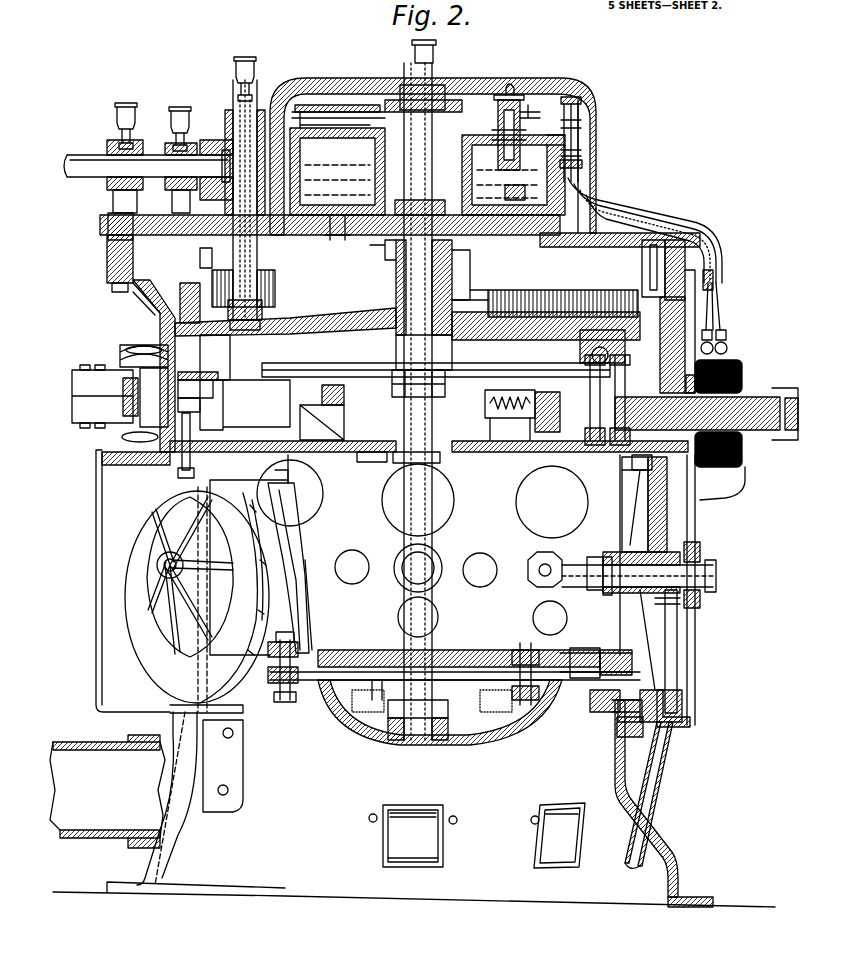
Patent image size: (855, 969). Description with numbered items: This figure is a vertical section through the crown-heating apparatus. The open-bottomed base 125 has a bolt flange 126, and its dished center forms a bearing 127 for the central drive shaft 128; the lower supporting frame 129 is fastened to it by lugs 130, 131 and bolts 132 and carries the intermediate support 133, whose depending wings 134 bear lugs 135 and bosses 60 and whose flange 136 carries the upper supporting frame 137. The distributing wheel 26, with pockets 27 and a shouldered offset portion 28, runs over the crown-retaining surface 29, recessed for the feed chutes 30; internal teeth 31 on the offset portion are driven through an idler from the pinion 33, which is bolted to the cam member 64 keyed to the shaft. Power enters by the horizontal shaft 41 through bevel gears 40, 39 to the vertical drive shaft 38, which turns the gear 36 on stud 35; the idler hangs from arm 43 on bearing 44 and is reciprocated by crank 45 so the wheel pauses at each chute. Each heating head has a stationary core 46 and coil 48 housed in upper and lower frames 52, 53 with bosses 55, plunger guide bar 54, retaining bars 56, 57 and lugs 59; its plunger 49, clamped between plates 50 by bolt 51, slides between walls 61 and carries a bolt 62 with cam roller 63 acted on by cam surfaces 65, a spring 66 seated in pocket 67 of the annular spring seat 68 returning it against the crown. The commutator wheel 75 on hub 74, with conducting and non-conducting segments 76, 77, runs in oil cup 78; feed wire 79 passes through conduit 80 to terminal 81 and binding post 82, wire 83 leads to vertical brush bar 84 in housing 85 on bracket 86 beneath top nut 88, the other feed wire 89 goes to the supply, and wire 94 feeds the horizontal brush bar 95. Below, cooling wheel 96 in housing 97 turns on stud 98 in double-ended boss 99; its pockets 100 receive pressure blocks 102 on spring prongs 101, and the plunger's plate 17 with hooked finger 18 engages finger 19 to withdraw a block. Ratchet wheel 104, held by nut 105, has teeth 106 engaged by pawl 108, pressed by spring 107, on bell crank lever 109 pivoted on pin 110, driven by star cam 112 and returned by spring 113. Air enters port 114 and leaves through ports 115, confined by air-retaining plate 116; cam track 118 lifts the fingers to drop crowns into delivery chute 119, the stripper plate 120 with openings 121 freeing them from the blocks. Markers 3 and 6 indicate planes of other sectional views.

The housing plate 3 is at (190, 236).
The fly wheel and shaft 6 is at (124, 558).
The plate 17 is at (622, 506).
The hooked finger 18 is at (642, 468).
The finger 19 is at (616, 706).
The crown distributing wheel 26 is at (107, 249).
The vertical pockets 27 is at (214, 257).
The shouldered offset portion 28 is at (208, 268).
The annular flat surface 29 is at (136, 290).
The vertical crown feed chutes 30 is at (684, 319).
The teeth 31 is at (224, 286).
The pinion 33 is at (470, 296).
The stud 35 is at (345, 232).
The gear 36 is at (385, 252).
The vertical drive shaft 38 is at (254, 162).
The bevel gear 39 is at (258, 186).
The bevel gear 40 is at (205, 136).
The horizontal power shaft 41 is at (90, 160).
The arm 43 is at (406, 272).
The bearing 44 is at (452, 278).
The crank 45 is at (251, 318).
The stationary core 46 is at (748, 472).
The coil 48 is at (136, 348).
The reciprocating plunger 49 is at (342, 406).
The plates 50 is at (530, 445).
The bolt 51 is at (604, 396).
The upper frame 52 is at (72, 384).
The lower frame 53 is at (72, 413).
The plunger guide bar 54 is at (622, 491).
The bosses 55 is at (82, 368).
The upper retaining bar 56 is at (126, 352).
The lower retaining bar 57 is at (150, 462).
The lugs 59 is at (128, 394).
The bosses 60 is at (154, 397).
The walls 61 is at (290, 402).
The bolt 62 is at (541, 428).
The cam roller 63 is at (302, 380).
The cam member 64 is at (594, 348).
The cam surfaces 65 is at (392, 392).
The spring 66 is at (490, 406).
The pocket 67 is at (495, 446).
The annular spring seat 68 is at (348, 442).
The hub 74 is at (500, 98).
The commutator wheel 75 is at (480, 205).
The segments 76 is at (520, 202).
The segments 77 is at (378, 184).
The cup 78 is at (526, 275).
The feed wire 79 is at (584, 139).
The conduit 80 is at (682, 220).
The terminal 81 is at (580, 104).
The binding post 82 is at (574, 97).
The wire 83 is at (530, 108).
The vertical brush bar 84 is at (580, 172).
The housing 85 is at (581, 153).
The bracket 86 is at (581, 124).
The top nut 88 is at (514, 92).
The feed wire 89 is at (584, 146).
The wire 94 is at (292, 94).
The horizontal brush bar 95 is at (356, 108).
The cooling wheel 96 is at (237, 577).
The housing 97 is at (95, 640).
The stud 98 is at (157, 566).
The double ended boss 99 is at (434, 558).
The crown receiving pockets 100 is at (678, 671).
The prongs 101 is at (660, 645).
The pressure block 102 is at (684, 700).
The ratchet wheel 104 is at (292, 557).
The nut 105 is at (605, 594).
The teeth 106 is at (294, 581).
The spring 107 is at (606, 650).
The pawl 108 is at (598, 690).
The bell crank lever 109 is at (539, 690).
The pin 110 is at (522, 696).
The five pointed star cam 112 is at (375, 652).
The spring 113 is at (590, 648).
The port 114 is at (107, 791).
The ports 115 is at (382, 500).
The air-retaining plate 116 is at (385, 456).
The cam track 118 is at (240, 736).
The delivery chute 119 is at (243, 766).
The stripper plate 120 is at (688, 727).
The opening 121 is at (645, 710).
The base 125 is at (678, 850).
The bolt flange 126 is at (714, 897).
The bearing 127 is at (448, 730).
The central drive shaft 128 is at (432, 180).
The lower supporting frame 129 is at (310, 612).
The lugs 130 is at (304, 641).
The lugs 131 is at (286, 696).
The bolts 132 is at (283, 628).
The intermediate support 133 is at (160, 318).
The depending wings 134 is at (192, 372).
The lugs 135 is at (205, 436).
The flange 136 is at (107, 273).
The upper supporting frame 137 is at (108, 214).